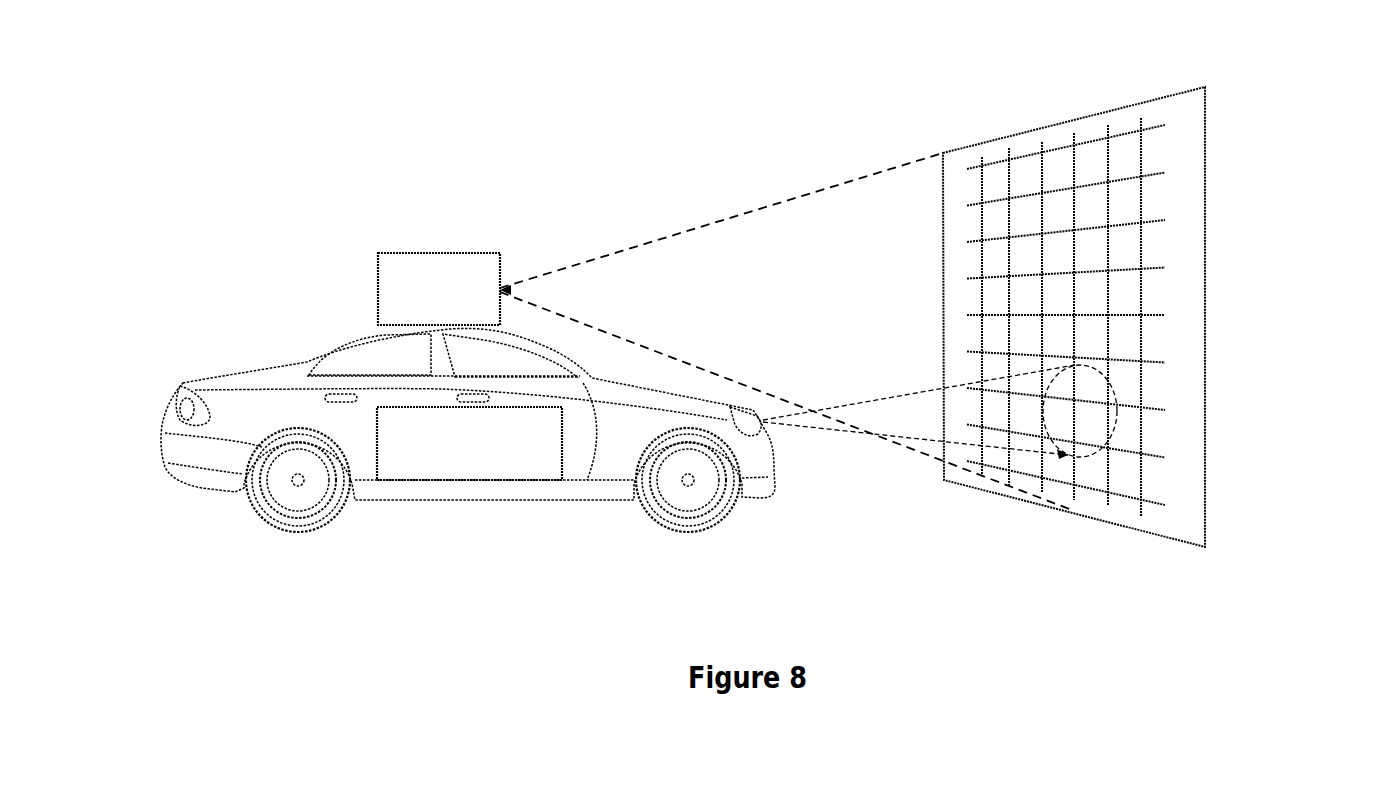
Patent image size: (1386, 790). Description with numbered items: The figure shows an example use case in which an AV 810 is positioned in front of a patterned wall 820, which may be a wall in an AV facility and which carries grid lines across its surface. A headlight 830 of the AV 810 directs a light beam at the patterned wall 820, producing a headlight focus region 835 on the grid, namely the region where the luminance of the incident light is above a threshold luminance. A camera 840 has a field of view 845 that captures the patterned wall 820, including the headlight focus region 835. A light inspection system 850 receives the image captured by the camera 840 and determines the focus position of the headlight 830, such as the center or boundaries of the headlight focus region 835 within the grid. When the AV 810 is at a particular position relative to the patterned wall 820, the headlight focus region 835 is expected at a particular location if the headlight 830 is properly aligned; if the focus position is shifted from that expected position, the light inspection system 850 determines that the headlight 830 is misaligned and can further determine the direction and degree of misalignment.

The AV 810 is at (468, 430).
The patterned wall 820 is at (1013, 128).
The headlight 830 is at (770, 428).
The headlight focus region 835 is at (1118, 397).
The camera 840 is at (439, 289).
The field of view 845 is at (722, 263).
The light inspection system 850 is at (469, 443).